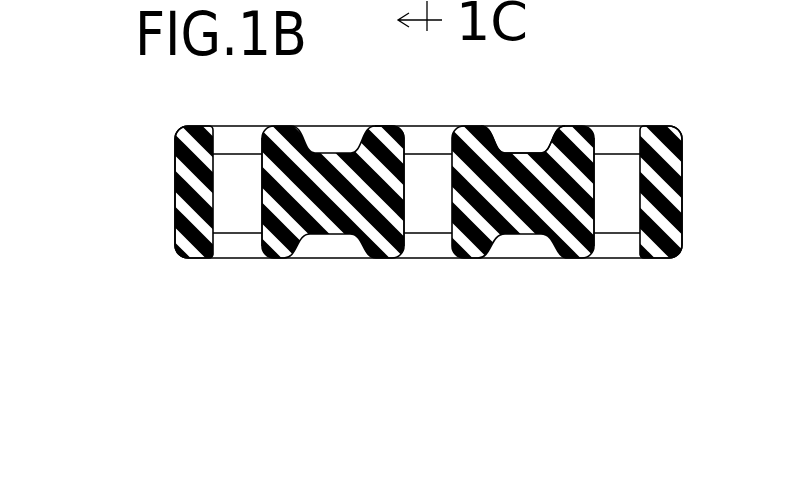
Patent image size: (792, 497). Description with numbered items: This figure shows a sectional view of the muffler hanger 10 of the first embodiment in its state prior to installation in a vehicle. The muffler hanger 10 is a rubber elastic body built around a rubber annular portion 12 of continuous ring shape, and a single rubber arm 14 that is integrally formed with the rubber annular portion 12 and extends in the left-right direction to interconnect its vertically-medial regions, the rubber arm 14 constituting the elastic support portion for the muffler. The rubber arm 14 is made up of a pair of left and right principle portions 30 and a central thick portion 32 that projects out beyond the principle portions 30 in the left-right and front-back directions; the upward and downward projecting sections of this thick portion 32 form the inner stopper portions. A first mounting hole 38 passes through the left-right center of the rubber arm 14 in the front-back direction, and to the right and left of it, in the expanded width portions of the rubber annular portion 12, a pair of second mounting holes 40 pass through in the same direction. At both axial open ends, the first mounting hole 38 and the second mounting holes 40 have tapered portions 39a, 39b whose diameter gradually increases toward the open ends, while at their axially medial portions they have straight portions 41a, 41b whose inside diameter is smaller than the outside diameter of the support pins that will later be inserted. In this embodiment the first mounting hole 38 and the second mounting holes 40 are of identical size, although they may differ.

The muffler hanger 10 is at (613, 100).
The rubber annular portion 12 is at (668, 133).
The rubber arm 14 is at (520, 148).
The principle portions 30 is at (312, 221).
The central thick portion 32 is at (388, 147).
The first mounting hole 38 is at (438, 200).
The tapered portions 39a is at (451, 140).
The tapered portions 39b is at (218, 136).
The second mounting holes 40 is at (211, 200).
The straight portion 41a is at (407, 170).
The straight portions 41b is at (600, 173).